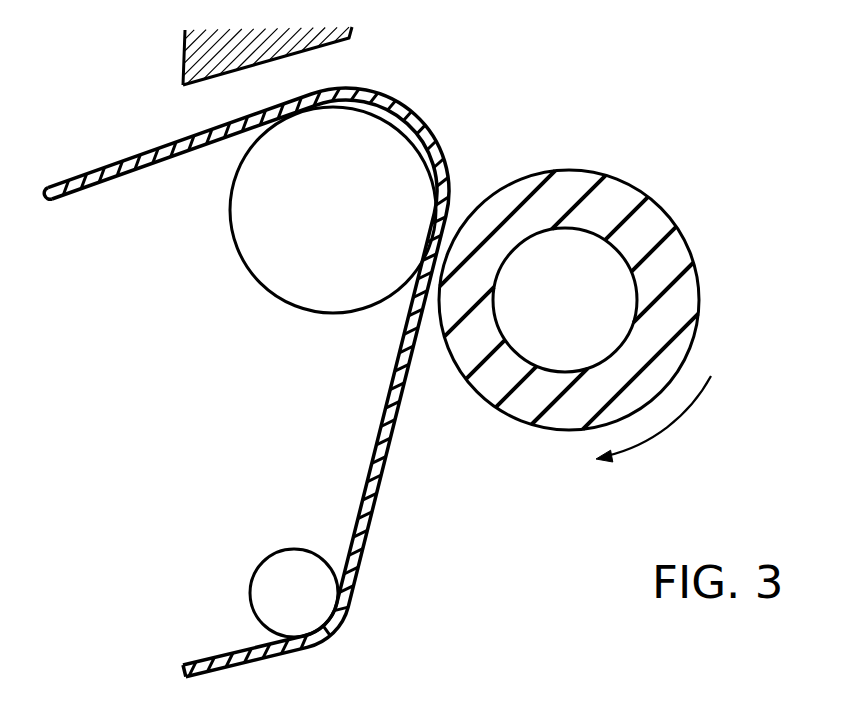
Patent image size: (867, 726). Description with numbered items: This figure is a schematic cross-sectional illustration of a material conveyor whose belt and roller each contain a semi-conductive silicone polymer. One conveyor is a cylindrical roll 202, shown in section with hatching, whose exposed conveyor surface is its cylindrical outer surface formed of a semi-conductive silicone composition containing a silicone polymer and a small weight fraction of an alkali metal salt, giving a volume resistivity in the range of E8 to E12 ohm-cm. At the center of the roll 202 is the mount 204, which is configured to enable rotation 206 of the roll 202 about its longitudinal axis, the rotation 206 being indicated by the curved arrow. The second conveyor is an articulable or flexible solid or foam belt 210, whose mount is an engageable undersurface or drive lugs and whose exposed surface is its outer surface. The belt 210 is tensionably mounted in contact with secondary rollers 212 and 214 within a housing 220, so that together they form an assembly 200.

The assembly 200 is at (546, 603).
The cylindrical roll 202 is at (608, 197).
The mount 204 is at (608, 307).
The rotation 206 is at (692, 402).
The belt 210 is at (120, 177).
The secondary roller 212 is at (373, 160).
The secondary roller 214 is at (265, 574).
The housing 220 is at (183, 60).